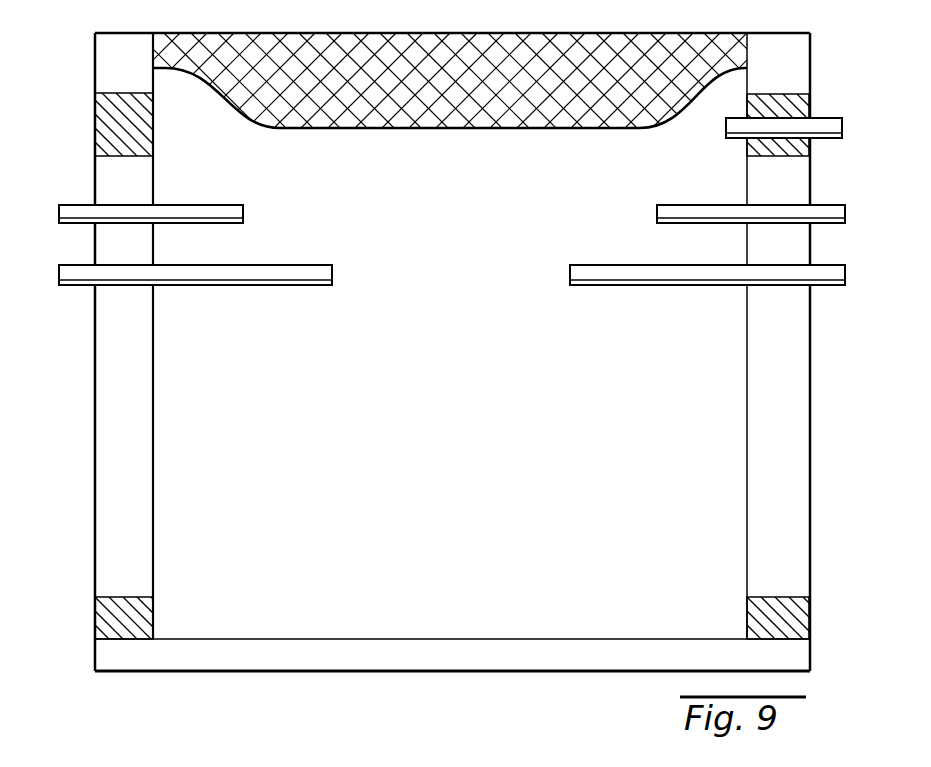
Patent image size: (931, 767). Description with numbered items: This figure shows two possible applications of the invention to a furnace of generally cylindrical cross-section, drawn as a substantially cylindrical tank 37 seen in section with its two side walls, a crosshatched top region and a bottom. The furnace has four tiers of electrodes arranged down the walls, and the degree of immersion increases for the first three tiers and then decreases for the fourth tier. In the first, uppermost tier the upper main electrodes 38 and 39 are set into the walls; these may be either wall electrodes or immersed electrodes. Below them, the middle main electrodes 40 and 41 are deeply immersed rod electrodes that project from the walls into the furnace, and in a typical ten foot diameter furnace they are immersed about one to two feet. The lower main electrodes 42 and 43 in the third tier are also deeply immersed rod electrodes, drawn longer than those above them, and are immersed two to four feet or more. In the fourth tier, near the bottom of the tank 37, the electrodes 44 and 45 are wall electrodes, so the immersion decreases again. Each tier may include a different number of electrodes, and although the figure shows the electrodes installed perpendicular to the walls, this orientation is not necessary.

The tank 37 is at (96, 377).
The upper main electrode 38 is at (154, 126).
The upper main electrode 39 is at (745, 131).
The middle main electrode 40 is at (208, 208).
The middle main electrode 41 is at (703, 207).
The lower main electrode 42 is at (280, 270).
The lower main electrode 43 is at (657, 266).
The wall electrode 44 is at (155, 617).
The wall electrode 45 is at (748, 613).